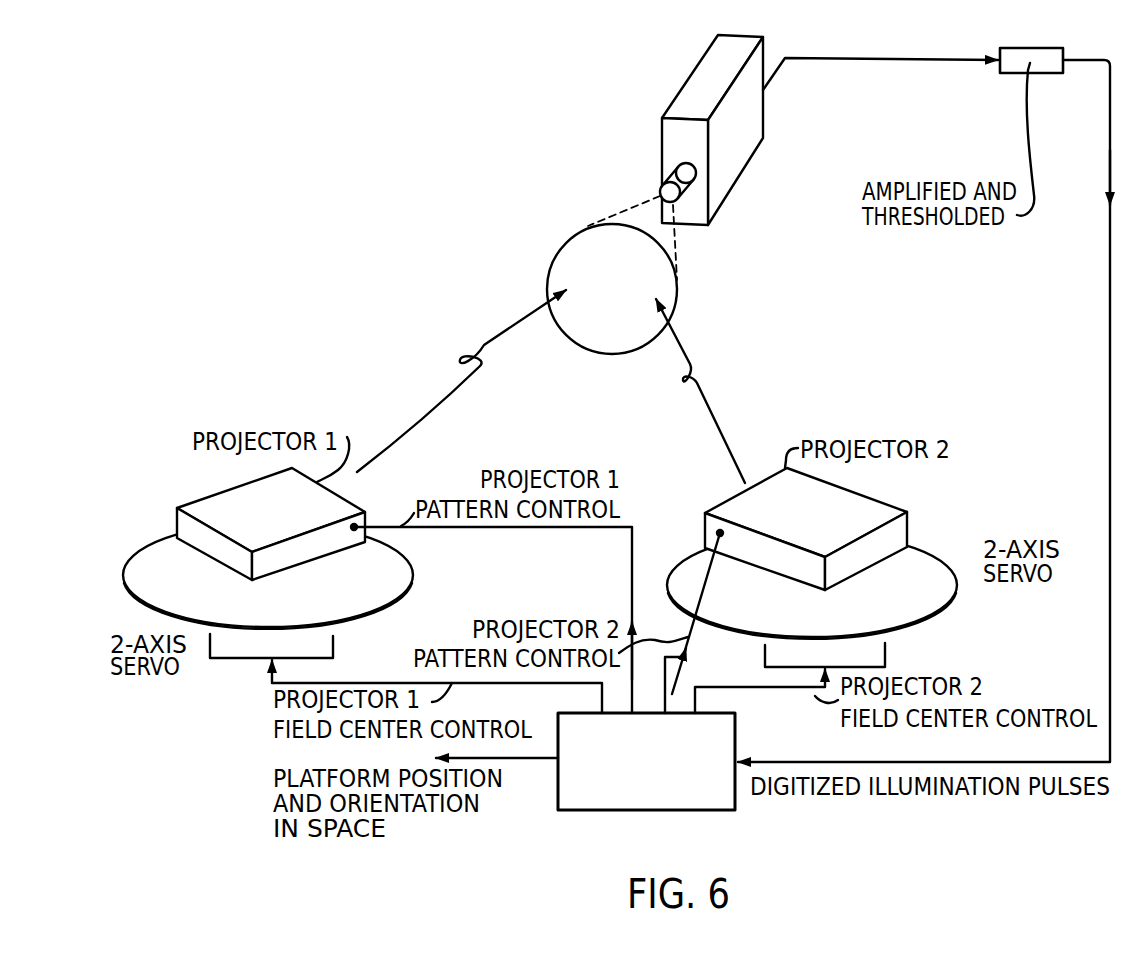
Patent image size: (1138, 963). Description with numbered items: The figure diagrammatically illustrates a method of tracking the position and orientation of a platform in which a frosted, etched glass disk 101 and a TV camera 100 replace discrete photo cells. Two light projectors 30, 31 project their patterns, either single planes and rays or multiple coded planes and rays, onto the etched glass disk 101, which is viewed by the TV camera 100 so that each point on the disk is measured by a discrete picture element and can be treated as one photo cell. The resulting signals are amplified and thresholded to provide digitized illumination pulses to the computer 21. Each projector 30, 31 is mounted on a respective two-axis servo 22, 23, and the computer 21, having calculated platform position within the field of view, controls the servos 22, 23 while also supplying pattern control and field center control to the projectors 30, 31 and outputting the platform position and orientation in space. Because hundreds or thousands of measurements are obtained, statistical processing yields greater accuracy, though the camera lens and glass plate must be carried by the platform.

The TV camera 100 is at (688, 80).
The etched glass disk 101 is at (679, 289).
The light projector 30 is at (227, 500).
The light projector 31 is at (833, 497).
The 2-axis pointing servo 22 is at (172, 603).
The 2-axis pointing servo 23 is at (942, 560).
The computer 21 is at (582, 800).